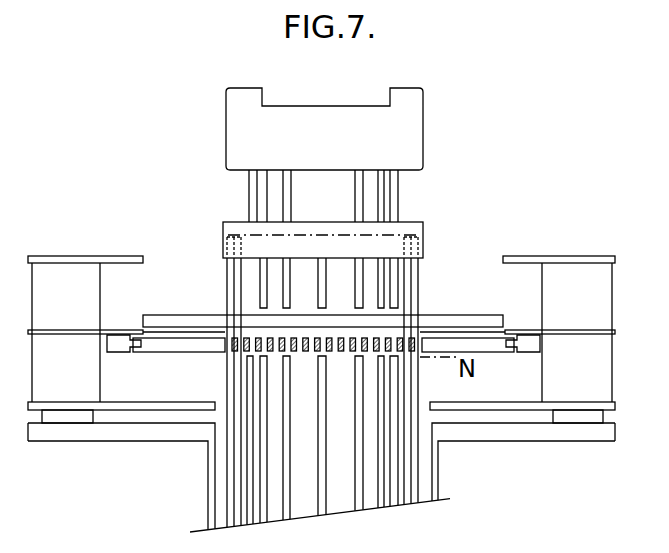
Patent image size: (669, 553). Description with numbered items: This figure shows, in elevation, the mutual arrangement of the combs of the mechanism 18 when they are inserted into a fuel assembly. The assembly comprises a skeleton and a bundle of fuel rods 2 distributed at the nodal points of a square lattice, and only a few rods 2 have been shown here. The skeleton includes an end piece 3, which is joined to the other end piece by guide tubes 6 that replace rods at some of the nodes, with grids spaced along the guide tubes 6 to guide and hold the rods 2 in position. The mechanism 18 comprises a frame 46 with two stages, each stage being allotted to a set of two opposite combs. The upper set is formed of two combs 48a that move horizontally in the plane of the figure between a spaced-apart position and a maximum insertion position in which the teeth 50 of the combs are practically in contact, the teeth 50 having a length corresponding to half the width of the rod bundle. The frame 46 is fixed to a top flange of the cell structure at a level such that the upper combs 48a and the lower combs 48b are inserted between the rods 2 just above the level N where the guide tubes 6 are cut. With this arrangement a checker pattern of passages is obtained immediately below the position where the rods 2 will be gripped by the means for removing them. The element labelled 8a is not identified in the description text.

The end piece 3 is at (372, 123).
The guide tubes 6 is at (398, 193).
The support bar 8a is at (400, 230).
The fuel rods 2 is at (415, 292).
The upper combs 48a is at (343, 321).
The lower combs 48b is at (165, 343).
The teeth 50 is at (320, 347).
The mechanism 18 is at (80, 253).
The frame 46 is at (515, 405).